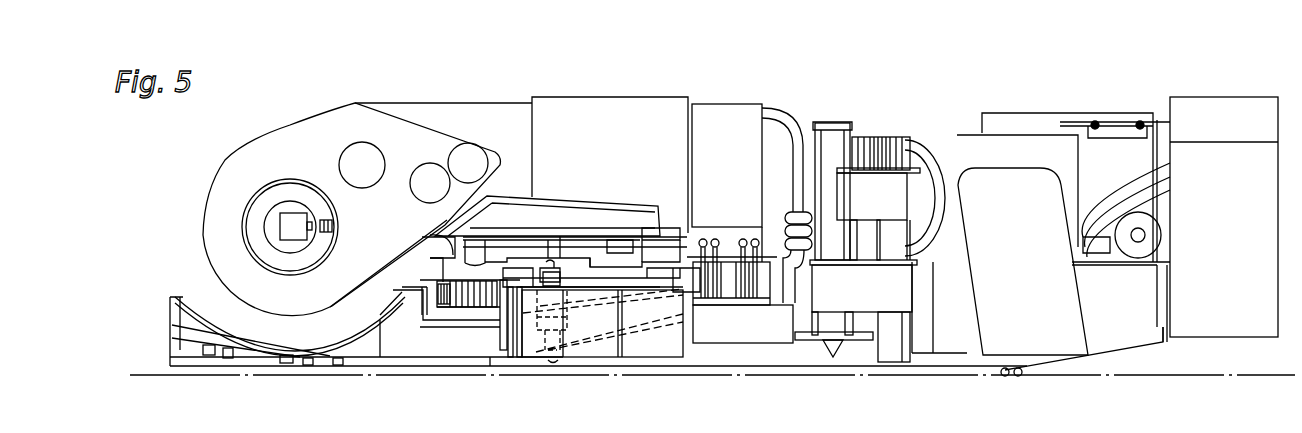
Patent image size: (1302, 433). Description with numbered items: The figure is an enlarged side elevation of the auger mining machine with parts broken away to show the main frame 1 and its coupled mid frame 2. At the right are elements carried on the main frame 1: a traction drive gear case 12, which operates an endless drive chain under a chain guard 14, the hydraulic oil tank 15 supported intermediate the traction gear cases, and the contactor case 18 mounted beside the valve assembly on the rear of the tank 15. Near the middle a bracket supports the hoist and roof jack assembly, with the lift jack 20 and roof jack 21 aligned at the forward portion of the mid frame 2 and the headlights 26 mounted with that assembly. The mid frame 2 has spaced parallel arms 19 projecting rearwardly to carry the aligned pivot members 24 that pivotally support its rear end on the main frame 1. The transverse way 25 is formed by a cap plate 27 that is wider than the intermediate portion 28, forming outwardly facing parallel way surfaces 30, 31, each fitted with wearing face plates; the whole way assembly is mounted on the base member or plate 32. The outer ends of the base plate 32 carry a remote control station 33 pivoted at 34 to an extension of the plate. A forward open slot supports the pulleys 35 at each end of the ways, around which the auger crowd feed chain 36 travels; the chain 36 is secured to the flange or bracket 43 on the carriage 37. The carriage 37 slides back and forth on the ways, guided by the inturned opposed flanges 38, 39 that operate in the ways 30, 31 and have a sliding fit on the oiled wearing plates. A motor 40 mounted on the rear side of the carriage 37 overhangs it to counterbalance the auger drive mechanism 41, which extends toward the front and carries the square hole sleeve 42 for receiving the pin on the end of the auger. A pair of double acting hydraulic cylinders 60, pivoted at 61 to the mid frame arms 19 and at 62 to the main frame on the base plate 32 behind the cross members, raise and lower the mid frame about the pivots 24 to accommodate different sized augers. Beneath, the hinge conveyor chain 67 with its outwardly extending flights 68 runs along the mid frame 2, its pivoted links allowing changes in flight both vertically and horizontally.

The main frame 1 is at (1140, 298).
The mid frame 2 is at (367, 357).
The traction drive gear case 12 is at (1030, 150).
The chain guard 14 is at (1055, 297).
The hydraulic oil tank 15 is at (1117, 122).
The contactor case 18 is at (1232, 196).
The spaced parallel arms 19 is at (633, 318).
The lift jack 20 is at (832, 175).
The roof jack 21 is at (893, 335).
The pivot members 24 is at (728, 298).
The transverse way 25 is at (607, 257).
The headlights 26 is at (877, 137).
The cap plate 27 is at (527, 227).
The intermediate portion 28 is at (563, 253).
The way surface 30 is at (485, 247).
The way surface 31 is at (612, 253).
The base member or plate 32 is at (570, 267).
The remote control station 33 is at (602, 347).
The pivot 34 is at (517, 360).
The pulleys 35 is at (450, 292).
The auger crowd feed chain 36 is at (440, 305).
The carriage 37 is at (513, 205).
The inturned flange 38 is at (643, 247).
The inturned flange 39 is at (635, 267).
The motor 40 is at (650, 90).
The auger drive mechanism 41 is at (290, 140).
The square hole sleeve 42 is at (283, 205).
The flange or bracket 43 is at (440, 275).
The cylinder 60 is at (558, 322).
The pivot 61 is at (553, 373).
The pivot 62 is at (562, 240).
The hinge conveyor chain 67 is at (172, 345).
The flights 68 is at (222, 353).